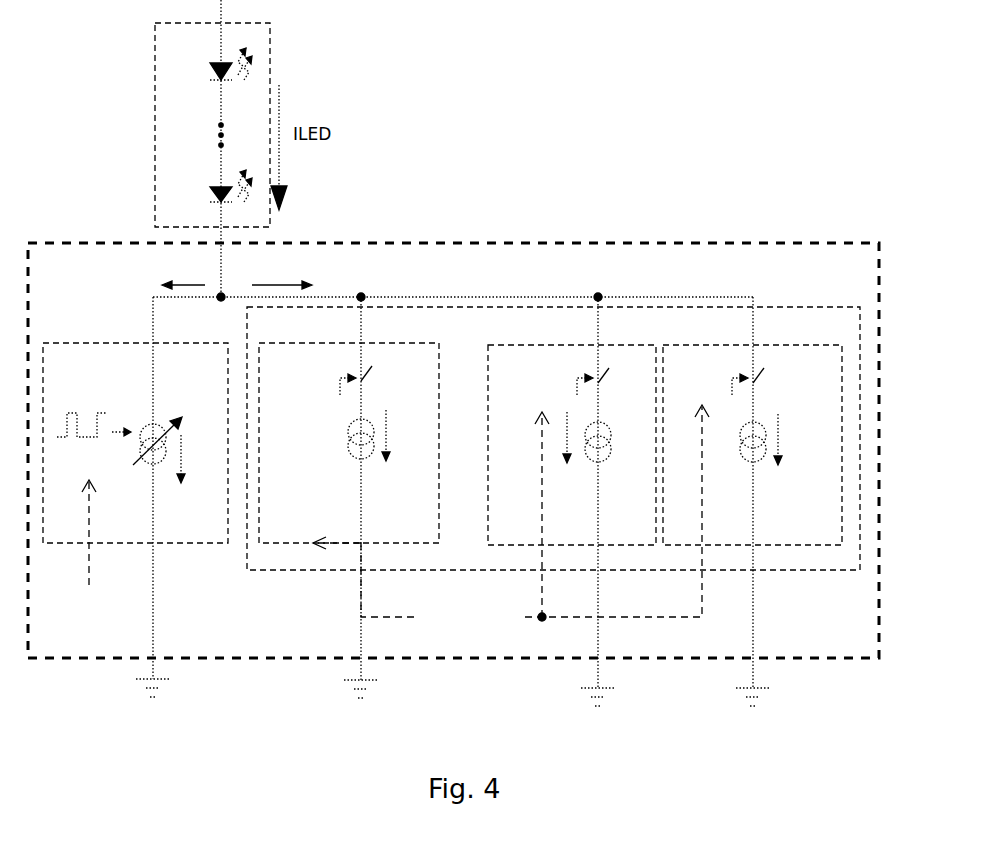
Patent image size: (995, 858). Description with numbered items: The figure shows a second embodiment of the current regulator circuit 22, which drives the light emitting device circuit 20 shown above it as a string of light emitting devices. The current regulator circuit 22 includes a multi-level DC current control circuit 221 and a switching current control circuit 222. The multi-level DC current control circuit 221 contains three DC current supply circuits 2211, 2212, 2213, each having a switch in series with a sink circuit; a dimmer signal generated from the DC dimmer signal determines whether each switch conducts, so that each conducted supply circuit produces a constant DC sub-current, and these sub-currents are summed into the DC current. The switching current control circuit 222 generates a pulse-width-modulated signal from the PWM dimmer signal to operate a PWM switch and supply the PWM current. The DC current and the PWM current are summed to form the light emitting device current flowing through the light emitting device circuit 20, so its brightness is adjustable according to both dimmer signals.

The light emitting device circuit 20 is at (193, 53).
The current regulator circuit 22 is at (753, 242).
The multi-level DC current control circuit 221 is at (841, 333).
The switching current control circuit 222 is at (219, 371).
The DC current supply circuit 2211 is at (838, 536).
The DC current supply circuit 2212 is at (650, 536).
The DC current supply circuit 2213 is at (432, 536).